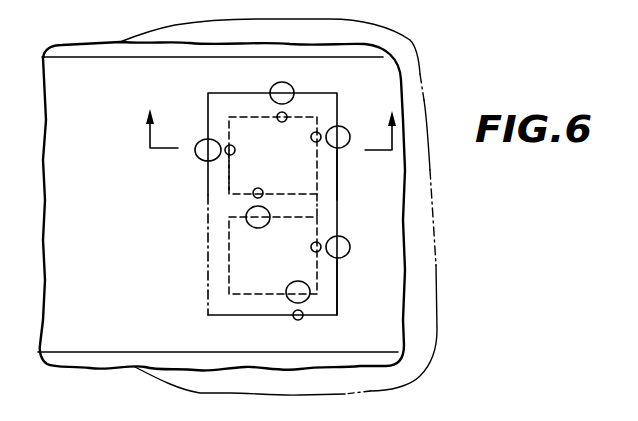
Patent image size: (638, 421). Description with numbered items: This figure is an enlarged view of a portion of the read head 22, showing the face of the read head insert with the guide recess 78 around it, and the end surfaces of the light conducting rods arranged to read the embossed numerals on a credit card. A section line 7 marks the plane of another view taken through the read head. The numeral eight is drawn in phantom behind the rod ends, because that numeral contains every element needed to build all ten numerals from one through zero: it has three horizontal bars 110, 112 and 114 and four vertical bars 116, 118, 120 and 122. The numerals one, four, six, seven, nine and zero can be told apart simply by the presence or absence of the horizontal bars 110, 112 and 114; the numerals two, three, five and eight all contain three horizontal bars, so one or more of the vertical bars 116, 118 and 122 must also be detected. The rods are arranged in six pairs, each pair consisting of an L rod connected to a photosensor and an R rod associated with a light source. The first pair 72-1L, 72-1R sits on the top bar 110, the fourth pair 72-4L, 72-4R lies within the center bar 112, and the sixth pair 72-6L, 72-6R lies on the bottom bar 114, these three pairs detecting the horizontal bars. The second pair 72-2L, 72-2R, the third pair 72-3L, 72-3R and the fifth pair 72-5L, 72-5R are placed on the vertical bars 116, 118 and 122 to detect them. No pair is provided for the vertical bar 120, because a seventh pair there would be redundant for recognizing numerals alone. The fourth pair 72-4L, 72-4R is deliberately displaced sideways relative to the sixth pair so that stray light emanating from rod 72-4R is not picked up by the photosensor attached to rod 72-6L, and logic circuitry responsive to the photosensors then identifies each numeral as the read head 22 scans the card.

The guide recess 78 is at (66, 61).
The read head 22 is at (109, 254).
The horizontal bar 110 is at (250, 97).
The horizontal bar 112 is at (302, 174).
The horizontal bar 114 is at (238, 296).
The vertical bar 116 is at (226, 172).
The vertical bar 118 is at (331, 173).
The vertical bar 120 is at (210, 255).
The vertical bar 122 is at (330, 285).
The section line 7 is at (269, 145).
The light conducting rod 72-1L is at (287, 84).
The light conducting rod 72-1R is at (282, 122).
The light conducting rod 72-2L is at (355, 121).
The light conducting rod 72-2R is at (316, 131).
The light conducting rod 72-3L is at (206, 158).
The light conducting rod 72-3R is at (230, 144).
The light conducting rod 72-4L is at (250, 211).
The light conducting rod 72-4R is at (254, 196).
The light conducting rod 72-5L is at (363, 232).
The light conducting rod 72-5R is at (320, 253).
The light conducting rod 72-6L is at (290, 288).
The light conducting rod 72-6R is at (297, 321).